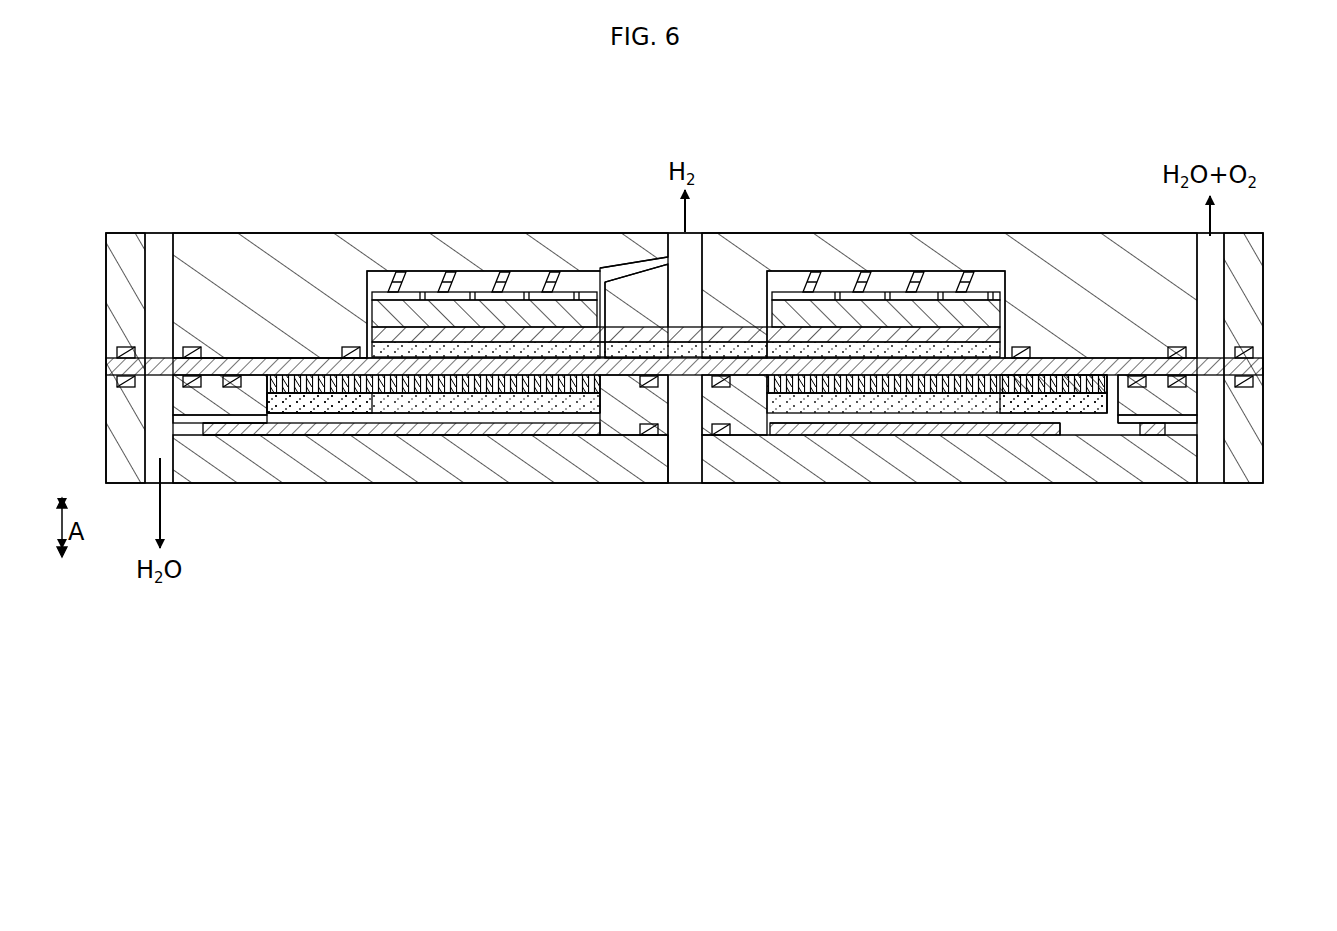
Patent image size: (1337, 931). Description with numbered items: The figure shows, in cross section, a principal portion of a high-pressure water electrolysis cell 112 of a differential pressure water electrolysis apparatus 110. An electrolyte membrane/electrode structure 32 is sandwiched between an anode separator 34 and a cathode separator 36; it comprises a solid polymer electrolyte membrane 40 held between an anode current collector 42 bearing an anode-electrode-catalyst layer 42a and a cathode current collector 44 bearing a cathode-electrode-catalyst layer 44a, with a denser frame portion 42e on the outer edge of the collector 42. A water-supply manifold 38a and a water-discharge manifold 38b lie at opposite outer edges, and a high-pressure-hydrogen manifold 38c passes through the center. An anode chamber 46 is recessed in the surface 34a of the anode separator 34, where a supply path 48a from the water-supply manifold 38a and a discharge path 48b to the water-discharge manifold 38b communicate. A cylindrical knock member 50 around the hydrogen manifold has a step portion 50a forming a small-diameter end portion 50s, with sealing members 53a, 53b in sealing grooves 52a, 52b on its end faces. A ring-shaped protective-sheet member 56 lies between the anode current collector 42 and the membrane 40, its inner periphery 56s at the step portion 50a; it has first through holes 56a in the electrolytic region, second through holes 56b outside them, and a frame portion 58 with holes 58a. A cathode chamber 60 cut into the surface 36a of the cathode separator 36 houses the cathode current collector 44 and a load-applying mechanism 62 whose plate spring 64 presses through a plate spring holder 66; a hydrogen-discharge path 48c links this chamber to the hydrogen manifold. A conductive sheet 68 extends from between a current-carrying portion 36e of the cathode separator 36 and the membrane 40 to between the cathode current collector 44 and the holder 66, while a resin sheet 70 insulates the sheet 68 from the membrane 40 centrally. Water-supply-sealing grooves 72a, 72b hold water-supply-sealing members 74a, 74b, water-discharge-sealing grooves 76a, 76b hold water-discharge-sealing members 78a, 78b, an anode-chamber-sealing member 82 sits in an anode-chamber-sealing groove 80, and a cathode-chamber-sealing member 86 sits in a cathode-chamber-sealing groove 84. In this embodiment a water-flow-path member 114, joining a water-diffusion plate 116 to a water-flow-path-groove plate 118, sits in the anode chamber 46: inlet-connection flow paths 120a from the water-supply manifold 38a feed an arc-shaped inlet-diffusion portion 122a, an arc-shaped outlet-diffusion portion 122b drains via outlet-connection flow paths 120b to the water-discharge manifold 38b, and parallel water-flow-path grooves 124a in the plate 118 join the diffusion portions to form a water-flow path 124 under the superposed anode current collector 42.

The differential pressure water electrolysis apparatus 110 is at (762, 88).
The high-pressure water electrolysis cell 112 is at (710, 88).
The electrolyte membrane/electrode structure 32 is at (242, 362).
The anode separator 34 is at (116, 487).
The surface 34a is at (212, 352).
The cathode separator 36 is at (118, 230).
The surface 36a is at (1158, 437).
The current-carrying portion 36e is at (628, 300).
The water-supply manifold 38a is at (170, 480).
The water-discharge manifold 38b is at (1210, 455).
The high-pressure-hydrogen manifold 38c is at (690, 455).
The solid polymer electrolyte membrane 40 is at (270, 357).
The anode current collector 42 is at (500, 437).
The anode-electrode-catalyst layer 42a is at (522, 437).
The frame portion 42e is at (380, 437).
The cathode current collector 44 is at (522, 312).
The cathode-electrode-catalyst layer 44a is at (490, 333).
The anode chamber 46 is at (562, 437).
The supply path 48a is at (212, 440).
The discharge path 48b is at (1185, 430).
The hydrogen-discharge path 48c is at (612, 290).
The knock member 50 is at (615, 440).
The step portion 50a is at (746, 300).
The end portion 50s is at (712, 335).
The sealing groove 52a is at (645, 437).
The sealing groove 52b is at (639, 328).
The sealing member 53a is at (661, 440).
The sealing member 53b is at (657, 252).
The protective-sheet member 56 is at (438, 436).
The first through holes 56a is at (955, 437).
The second through holes 56b is at (1003, 437).
The inner periphery 56s is at (720, 437).
The frame portion 58 is at (313, 437).
The holes 58a is at (245, 437).
The cathode chamber 60 is at (992, 270).
The load-applying mechanism 62 is at (925, 280).
The plate spring 64 is at (400, 294).
The plate spring holder 66 is at (446, 280).
The conductive sheet 68 is at (881, 333).
The resin sheet 70 is at (674, 346).
The first water-supply-sealing groove 72a is at (117, 382).
The second water-supply-sealing groove 72b is at (117, 352).
The first water-supply-sealing member 74a is at (126, 387).
The second water-supply-sealing member 74b is at (126, 347).
The first water-discharge-sealing groove 76a is at (1254, 382).
The second water-discharge-sealing groove 76b is at (1254, 352).
The first water-discharge-sealing member 78a is at (1245, 387).
The second water-discharge-sealing member 78b is at (1245, 347).
The anode-chamber-sealing groove 80 is at (1139, 376).
The anode-chamber-sealing member 82 is at (1122, 437).
The cathode-chamber-sealing groove 84 is at (348, 430).
The cathode-chamber-sealing member 86 is at (348, 346).
The water-flow-path member 114 is at (1102, 594).
The water-diffusion plate 116 is at (1032, 437).
The water-flow-path-groove plate 118 is at (1080, 437).
The inlet-connection flow paths 120a is at (255, 440).
The outlet-connection flow paths 120b is at (1137, 437).
The inlet-diffusion portion 122a is at (322, 415).
The outlet-diffusion portion 122b is at (1073, 377).
The water-flow path 124 is at (830, 437).
The water-flow-path grooves 124a is at (888, 437).